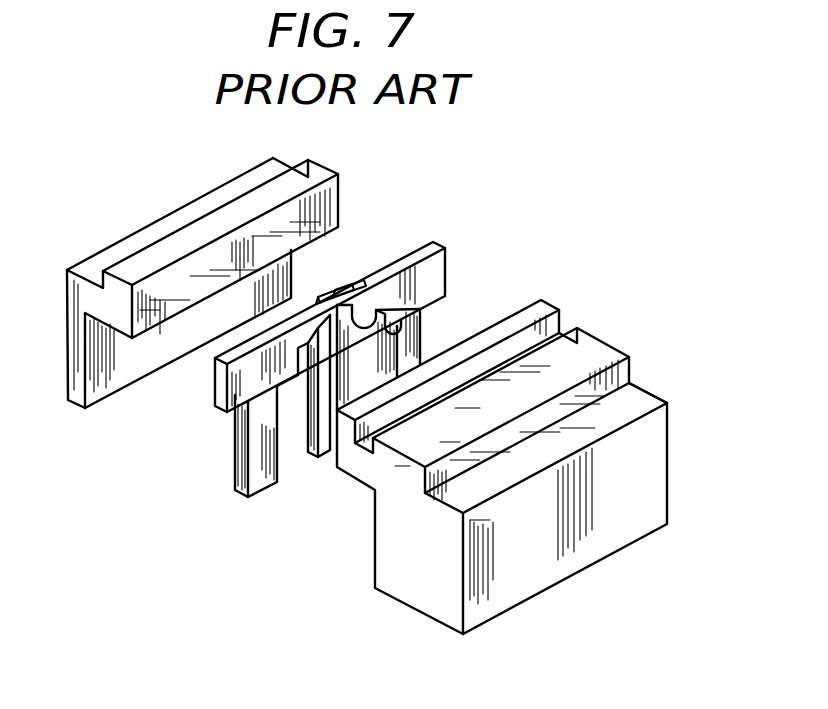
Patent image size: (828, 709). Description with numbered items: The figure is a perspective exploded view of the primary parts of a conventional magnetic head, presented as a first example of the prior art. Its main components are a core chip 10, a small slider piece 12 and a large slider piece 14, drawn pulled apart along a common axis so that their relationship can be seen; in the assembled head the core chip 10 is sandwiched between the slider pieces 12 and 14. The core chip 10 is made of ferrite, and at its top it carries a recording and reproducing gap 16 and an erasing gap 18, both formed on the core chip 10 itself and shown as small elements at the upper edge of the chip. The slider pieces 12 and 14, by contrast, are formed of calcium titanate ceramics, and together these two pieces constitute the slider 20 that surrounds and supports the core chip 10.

The core chip 10 is at (433, 241).
The slider piece (small) 12 is at (322, 165).
The slider piece (large) 14 is at (598, 331).
The recording and reproducing gap 16 is at (325, 292).
The erasing gap 18 is at (350, 285).
The slider 20 is at (669, 398).